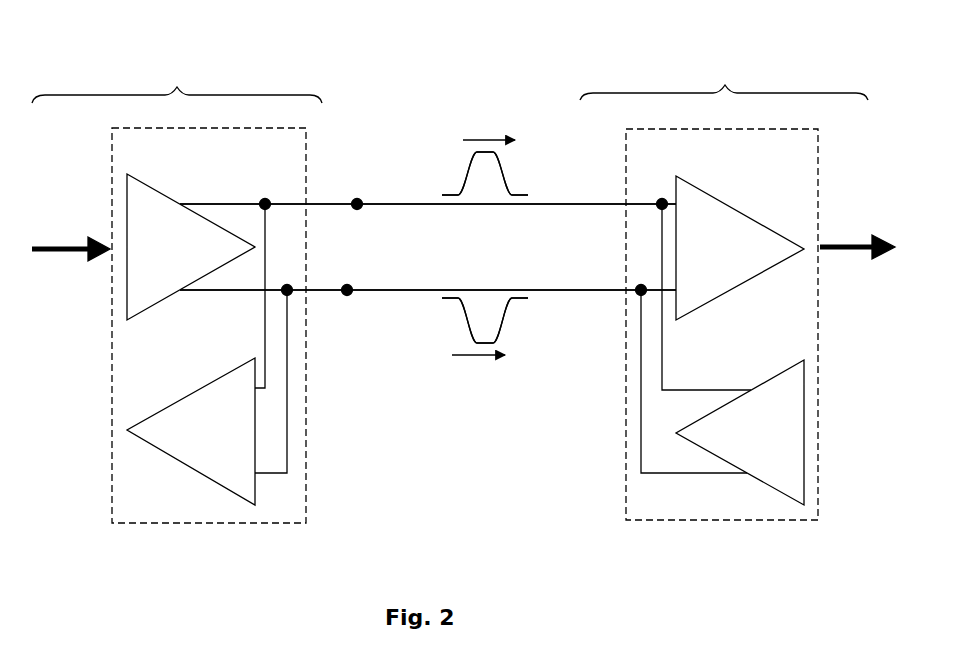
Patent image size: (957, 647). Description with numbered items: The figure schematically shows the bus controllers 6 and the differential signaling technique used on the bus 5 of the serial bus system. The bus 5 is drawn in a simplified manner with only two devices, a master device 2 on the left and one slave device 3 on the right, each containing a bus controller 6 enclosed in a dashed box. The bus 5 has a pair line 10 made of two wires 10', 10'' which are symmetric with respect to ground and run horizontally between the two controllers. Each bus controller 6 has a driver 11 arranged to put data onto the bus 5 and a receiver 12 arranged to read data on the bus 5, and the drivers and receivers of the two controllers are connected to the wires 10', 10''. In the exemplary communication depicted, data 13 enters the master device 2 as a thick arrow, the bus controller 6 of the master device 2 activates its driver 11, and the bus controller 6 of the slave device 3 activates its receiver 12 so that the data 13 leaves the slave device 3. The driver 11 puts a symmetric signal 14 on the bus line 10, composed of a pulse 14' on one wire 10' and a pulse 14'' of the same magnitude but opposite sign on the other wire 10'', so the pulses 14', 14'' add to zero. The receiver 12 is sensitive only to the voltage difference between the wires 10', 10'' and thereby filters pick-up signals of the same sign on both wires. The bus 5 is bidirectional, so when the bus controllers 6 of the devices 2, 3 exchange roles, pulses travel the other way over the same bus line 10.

The master device 2 is at (177, 80).
The slave device 3 is at (724, 77).
The bus 5 is at (566, 58).
The bus controller 6 is at (465, 325).
The bus line 10 is at (428, 198).
The first wire 10' is at (428, 178).
The second wire 10'' is at (428, 264).
The driver 11 is at (465, 339).
The receiver 12 is at (465, 340).
The data 13 is at (463, 237).
The symmetric signal 14 is at (557, 368).
The pulse on first wire 14' is at (513, 161).
The pulse on second wire 14'' is at (510, 326).